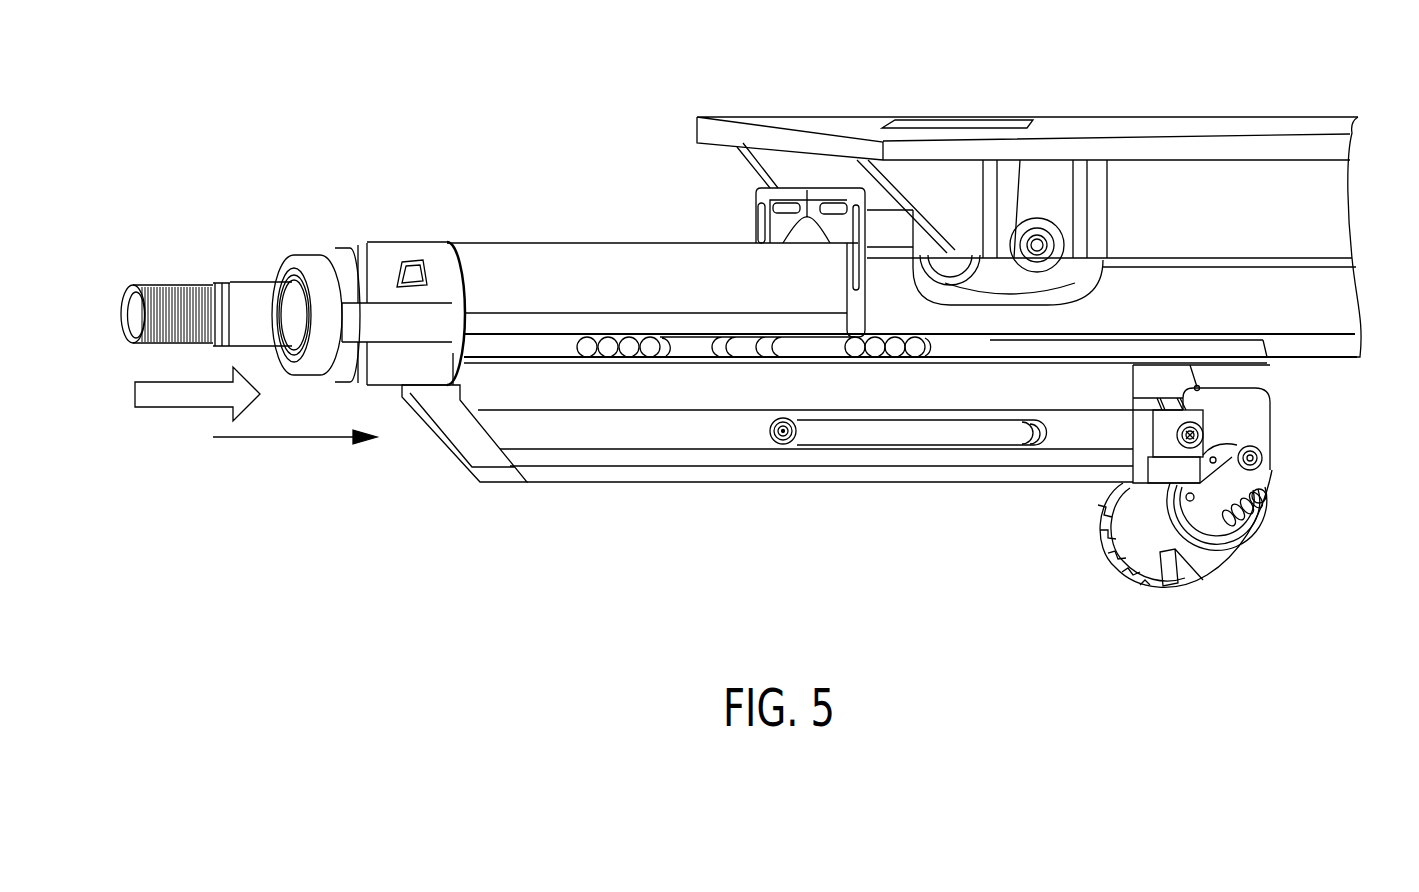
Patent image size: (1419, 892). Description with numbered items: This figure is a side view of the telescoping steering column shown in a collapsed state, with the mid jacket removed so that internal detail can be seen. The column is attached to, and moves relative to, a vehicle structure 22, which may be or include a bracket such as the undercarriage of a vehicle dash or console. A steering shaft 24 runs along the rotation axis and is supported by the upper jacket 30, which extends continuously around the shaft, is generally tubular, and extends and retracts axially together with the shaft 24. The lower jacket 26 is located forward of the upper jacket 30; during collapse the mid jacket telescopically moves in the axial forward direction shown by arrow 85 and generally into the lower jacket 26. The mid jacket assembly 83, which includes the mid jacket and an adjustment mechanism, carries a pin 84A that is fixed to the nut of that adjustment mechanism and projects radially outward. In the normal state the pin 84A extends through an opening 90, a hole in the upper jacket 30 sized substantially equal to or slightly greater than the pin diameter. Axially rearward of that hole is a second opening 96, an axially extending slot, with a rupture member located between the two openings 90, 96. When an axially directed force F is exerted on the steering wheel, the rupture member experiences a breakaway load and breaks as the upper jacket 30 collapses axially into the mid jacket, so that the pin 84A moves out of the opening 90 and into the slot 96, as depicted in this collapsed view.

The vehicle structure 22 is at (745, 117).
The steering shaft 24 is at (217, 278).
The lower jacket 26 is at (757, 207).
The upper jacket 30 is at (518, 243).
The mid jacket assembly 83 is at (1213, 562).
The pin 84A is at (783, 452).
The axial forward direction 85 is at (297, 440).
The opening 90 is at (1028, 442).
The opening 96 is at (877, 437).
The force F is at (178, 408).